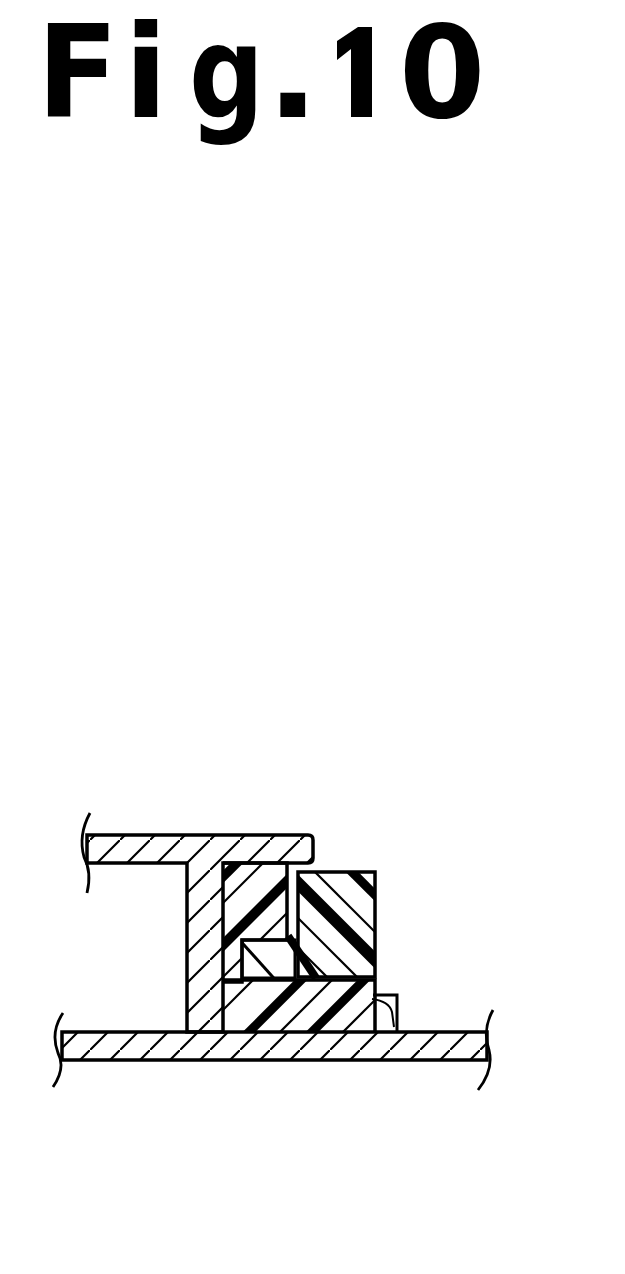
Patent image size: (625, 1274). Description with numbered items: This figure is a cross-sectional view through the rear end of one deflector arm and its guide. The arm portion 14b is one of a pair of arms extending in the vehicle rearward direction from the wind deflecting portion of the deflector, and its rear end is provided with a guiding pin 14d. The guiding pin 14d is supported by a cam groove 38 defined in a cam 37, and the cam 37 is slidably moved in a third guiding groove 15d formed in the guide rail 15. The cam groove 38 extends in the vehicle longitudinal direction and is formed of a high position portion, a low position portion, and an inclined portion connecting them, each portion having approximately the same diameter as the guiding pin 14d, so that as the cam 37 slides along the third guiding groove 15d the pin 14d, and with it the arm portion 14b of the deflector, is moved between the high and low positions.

The guide rail 15 is at (124, 850).
The third guiding groove 15d is at (333, 1033).
The cam 37 is at (255, 865).
The cam groove 38 is at (268, 967).
The arm portion 14b is at (378, 897).
The guiding pin 14d is at (288, 995).